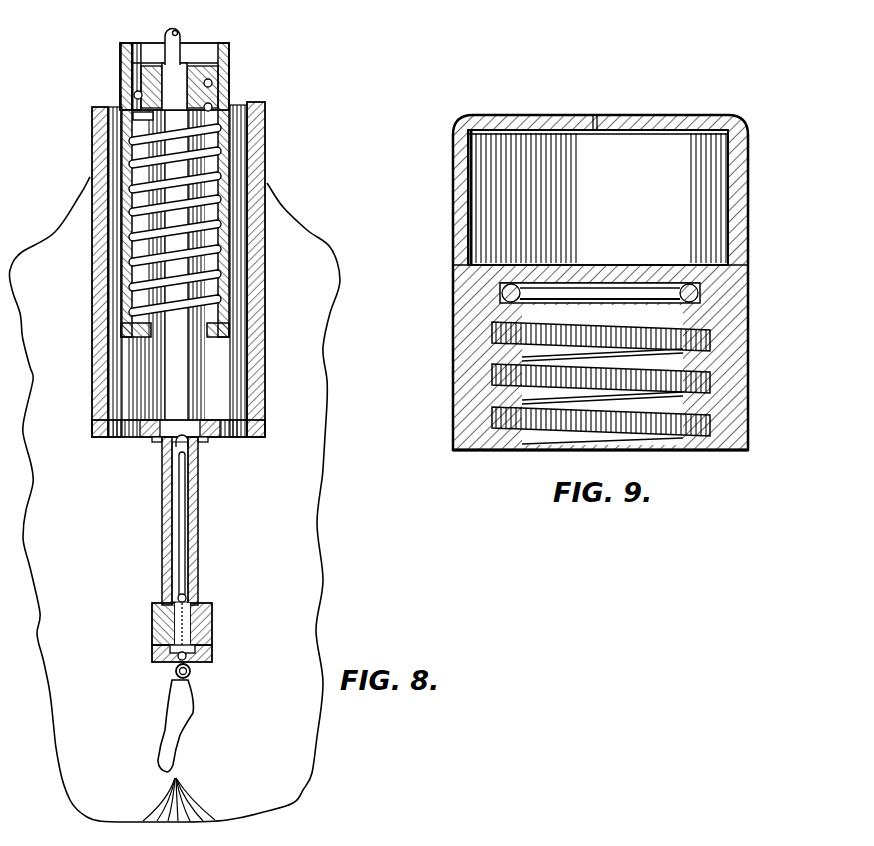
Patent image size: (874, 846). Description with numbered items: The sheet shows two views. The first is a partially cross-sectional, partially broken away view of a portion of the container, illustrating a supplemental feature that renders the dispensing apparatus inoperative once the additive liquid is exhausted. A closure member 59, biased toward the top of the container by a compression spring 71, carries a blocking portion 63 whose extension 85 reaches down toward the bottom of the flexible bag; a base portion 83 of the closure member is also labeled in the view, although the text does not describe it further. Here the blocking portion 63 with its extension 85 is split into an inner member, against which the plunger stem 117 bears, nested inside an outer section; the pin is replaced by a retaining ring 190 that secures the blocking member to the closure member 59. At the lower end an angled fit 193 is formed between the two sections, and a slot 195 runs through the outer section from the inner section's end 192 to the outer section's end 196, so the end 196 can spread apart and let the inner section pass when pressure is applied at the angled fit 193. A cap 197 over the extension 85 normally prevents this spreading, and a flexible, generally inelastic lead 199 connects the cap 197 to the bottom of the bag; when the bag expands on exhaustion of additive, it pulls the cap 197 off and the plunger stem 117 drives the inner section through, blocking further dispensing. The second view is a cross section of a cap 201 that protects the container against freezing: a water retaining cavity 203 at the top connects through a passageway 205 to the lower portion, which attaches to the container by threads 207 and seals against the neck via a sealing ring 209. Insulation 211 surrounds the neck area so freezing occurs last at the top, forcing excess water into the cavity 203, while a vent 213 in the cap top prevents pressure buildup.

In FIG. 8, the closure member 59 is at (268, 245).
In FIG. 8, the blocking portion 63 is at (204, 357).
In FIG. 8, the compression spring 71 is at (123, 265).
In FIG. 8, the bottom plate 83 is at (236, 436).
In FIG. 8, the extension 85 is at (162, 522).
In FIG. 8, the plunger stem 117 is at (177, 34).
In FIG. 8, the retaining ring 190 is at (158, 439).
In FIG. 8, the end of inner section 192 is at (152, 624).
In FIG. 8, the angled fit 193 is at (208, 650).
In FIG. 8, the slot 195 is at (175, 647).
In FIG. 8, the end of outer section 196 is at (167, 668).
In FIG. 8, the cap 197 is at (212, 622).
In FIG. 8, the lead 199 is at (193, 703).
In FIG. 9, the cap 201 is at (634, 115).
In FIG. 9, the water retaining cavity 203 is at (660, 182).
In FIG. 9, the passageway 205 is at (597, 264).
In FIG. 9, the threads 207 is at (493, 325).
In FIG. 9, the sealing ring 209 is at (703, 292).
In FIG. 9, the insulation 211 is at (728, 340).
In FIG. 9, the vent 213 is at (597, 116).